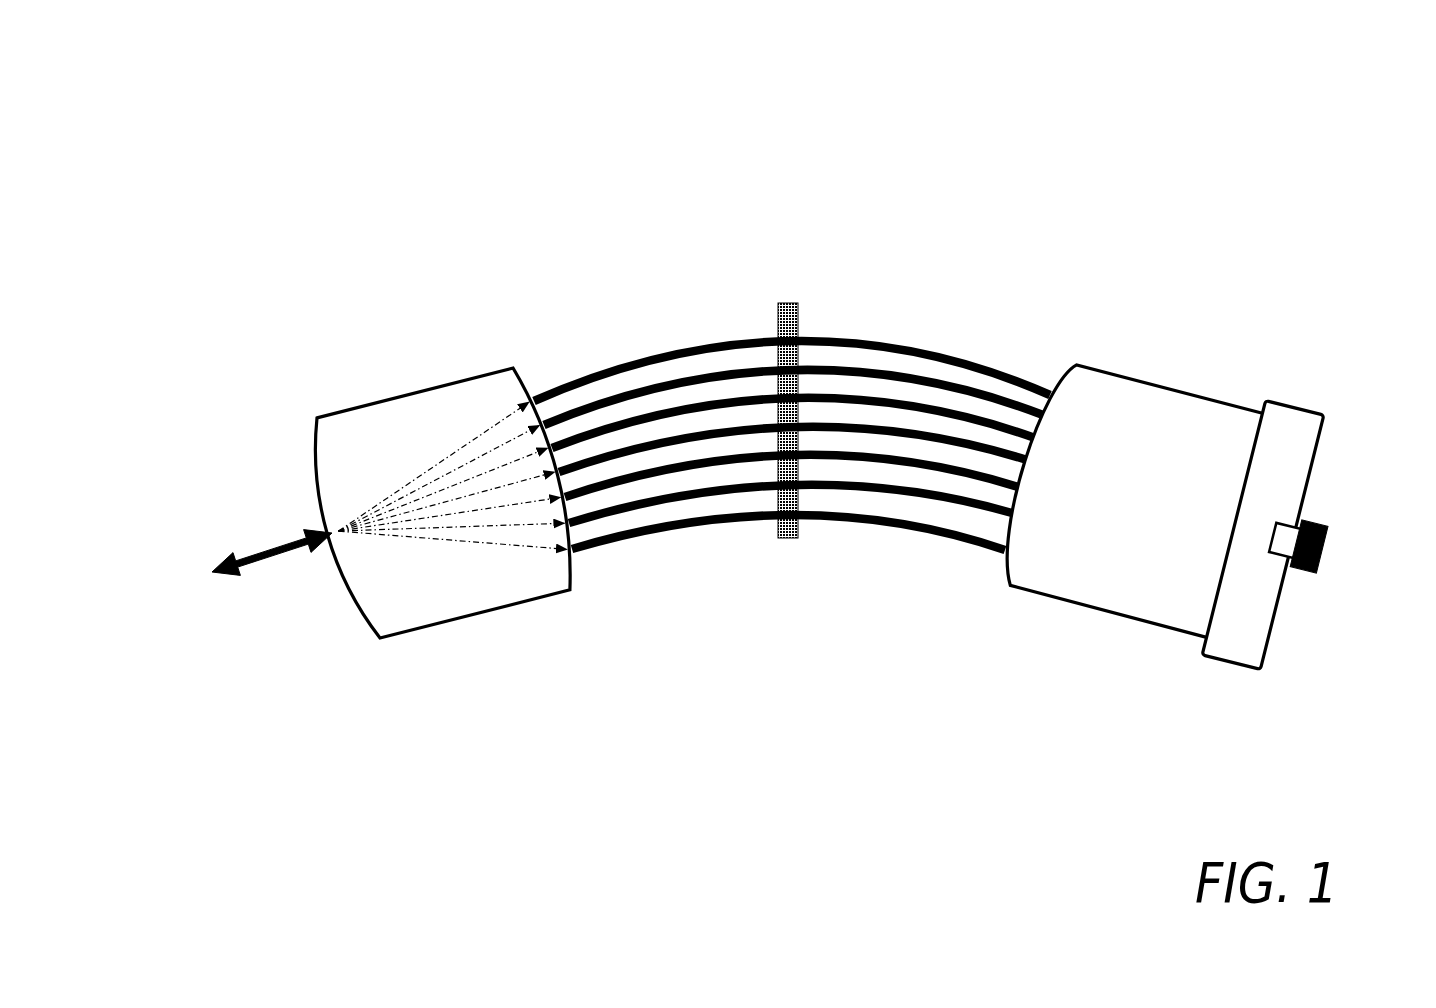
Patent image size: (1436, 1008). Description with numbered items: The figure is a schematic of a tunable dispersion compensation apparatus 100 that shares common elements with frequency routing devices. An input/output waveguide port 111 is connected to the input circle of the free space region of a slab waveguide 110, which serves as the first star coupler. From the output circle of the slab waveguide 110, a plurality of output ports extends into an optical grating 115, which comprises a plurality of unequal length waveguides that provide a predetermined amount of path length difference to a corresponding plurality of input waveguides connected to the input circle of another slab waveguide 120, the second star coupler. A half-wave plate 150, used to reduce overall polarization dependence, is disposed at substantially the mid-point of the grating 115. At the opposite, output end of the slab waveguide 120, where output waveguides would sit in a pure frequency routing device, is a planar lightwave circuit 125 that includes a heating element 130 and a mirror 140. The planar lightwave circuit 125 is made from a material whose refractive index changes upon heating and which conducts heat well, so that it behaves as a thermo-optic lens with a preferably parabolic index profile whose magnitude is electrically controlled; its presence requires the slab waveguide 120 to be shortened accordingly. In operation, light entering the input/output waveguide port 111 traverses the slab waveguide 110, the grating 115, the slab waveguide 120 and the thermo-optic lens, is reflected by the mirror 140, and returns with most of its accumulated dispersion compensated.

The optical fiber bundle system 100 is at (1307, 86).
The slab waveguide 110 is at (572, 592).
The input/output waveguide port 111 is at (210, 573).
The optical grating 115 is at (1080, 250).
The slab waveguide 120 is at (1008, 588).
The planar lightwave circuit 125 is at (1302, 410).
The heating element 130 is at (1280, 555).
The mirror 140 is at (1327, 547).
The half-wave plate 150 is at (800, 322).